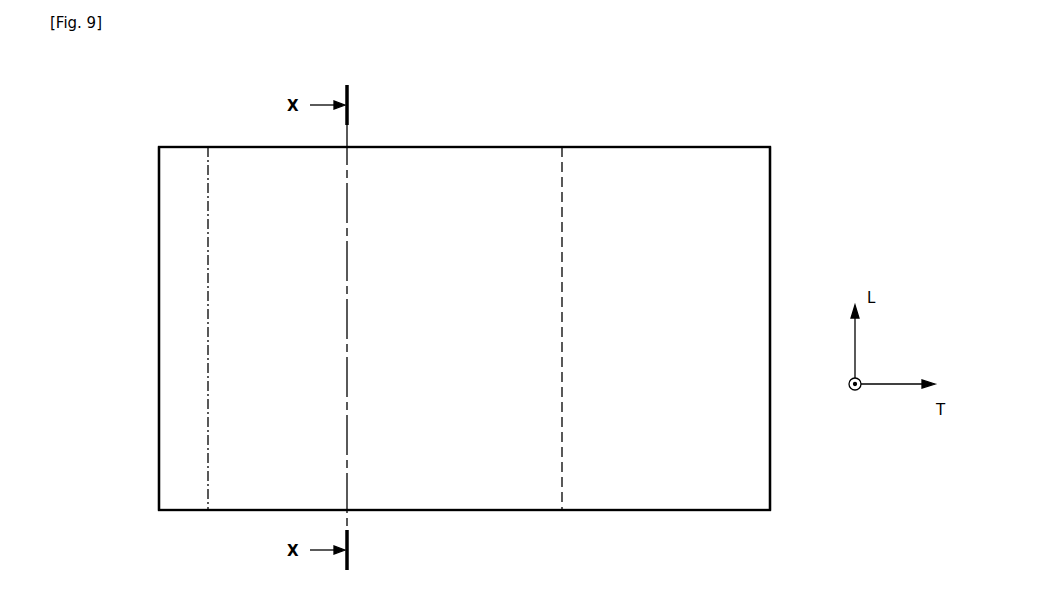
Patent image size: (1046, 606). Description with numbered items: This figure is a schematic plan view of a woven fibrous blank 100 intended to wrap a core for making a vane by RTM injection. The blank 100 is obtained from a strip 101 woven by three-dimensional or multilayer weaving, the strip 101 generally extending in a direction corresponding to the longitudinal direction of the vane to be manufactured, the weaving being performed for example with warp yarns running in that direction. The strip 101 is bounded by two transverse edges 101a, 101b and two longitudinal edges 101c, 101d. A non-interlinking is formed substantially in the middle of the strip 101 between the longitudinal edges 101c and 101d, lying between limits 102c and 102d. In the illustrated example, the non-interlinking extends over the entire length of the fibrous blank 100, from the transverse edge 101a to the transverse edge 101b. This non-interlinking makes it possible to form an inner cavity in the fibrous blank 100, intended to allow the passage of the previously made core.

The fibrous blank 100 is at (851, 122).
The strip 101 is at (616, 172).
The transverse edge 101a is at (415, 147).
The transverse edge 101b is at (415, 511).
The longitudinal edge 101c is at (158, 328).
The longitudinal edge 101d is at (772, 188).
The limit 102c is at (210, 175).
The limit 102d is at (560, 176).